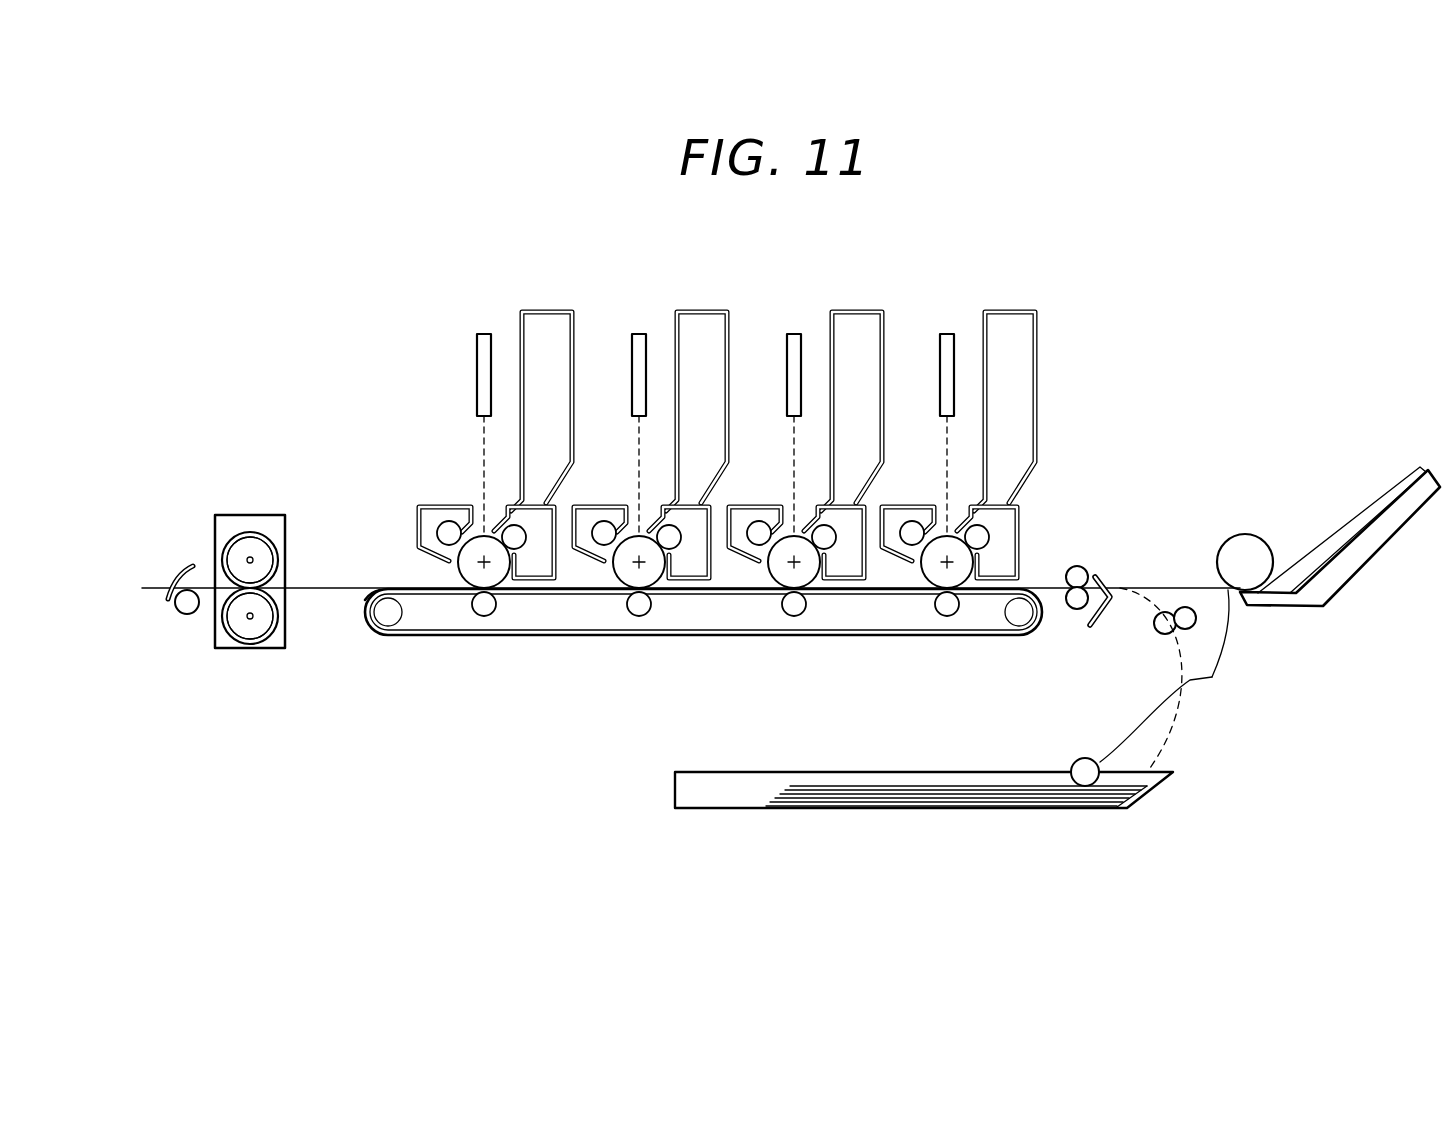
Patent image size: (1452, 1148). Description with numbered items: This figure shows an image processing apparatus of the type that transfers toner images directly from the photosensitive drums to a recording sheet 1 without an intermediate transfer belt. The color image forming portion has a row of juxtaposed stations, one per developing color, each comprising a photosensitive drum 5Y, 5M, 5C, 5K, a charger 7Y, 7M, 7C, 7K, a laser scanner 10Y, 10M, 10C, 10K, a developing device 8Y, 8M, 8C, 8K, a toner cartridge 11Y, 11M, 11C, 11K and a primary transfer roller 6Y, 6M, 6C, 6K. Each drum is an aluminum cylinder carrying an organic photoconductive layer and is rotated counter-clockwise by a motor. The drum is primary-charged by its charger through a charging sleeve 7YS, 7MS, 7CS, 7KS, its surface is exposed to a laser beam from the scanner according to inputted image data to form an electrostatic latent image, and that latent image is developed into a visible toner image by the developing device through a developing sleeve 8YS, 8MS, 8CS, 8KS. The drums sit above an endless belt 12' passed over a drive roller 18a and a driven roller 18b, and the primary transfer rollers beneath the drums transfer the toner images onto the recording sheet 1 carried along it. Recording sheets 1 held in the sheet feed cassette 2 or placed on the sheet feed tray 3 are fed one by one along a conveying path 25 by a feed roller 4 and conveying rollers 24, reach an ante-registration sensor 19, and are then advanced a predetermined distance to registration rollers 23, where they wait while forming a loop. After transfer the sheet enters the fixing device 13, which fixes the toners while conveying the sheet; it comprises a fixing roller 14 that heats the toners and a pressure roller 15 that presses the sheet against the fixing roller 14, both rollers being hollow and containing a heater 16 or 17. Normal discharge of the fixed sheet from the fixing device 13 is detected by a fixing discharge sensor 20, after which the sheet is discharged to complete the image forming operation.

The recording sheet 1 is at (1358, 532).
The sheet feed cassette 2 is at (733, 810).
The sheet feed tray 3 is at (1392, 540).
The feed roller 4 is at (1212, 677).
The photosensitive drum 5K is at (478, 537).
The photosensitive drum 5C is at (632, 523).
The photosensitive drum 5M is at (786, 523).
The photosensitive drum 5Y is at (940, 523).
The primary transfer roller 6K is at (484, 617).
The primary transfer roller 6C is at (643, 663).
The primary transfer roller 6M is at (798, 663).
The primary transfer roller 6Y is at (951, 663).
The charger 7K is at (434, 559).
The charger 7C is at (590, 591).
The charger 7M is at (744, 591).
The charger 7Y is at (899, 591).
The charging sleeve 7KS is at (451, 546).
The charging sleeve 7CS is at (601, 612).
The charging sleeve 7MS is at (757, 612).
The charging sleeve 7YS is at (910, 612).
The developing device 8K is at (544, 580).
The developing device 8C is at (685, 608).
The developing device 8M is at (841, 608).
The developing device 8Y is at (992, 608).
The developing sleeve 8KS is at (516, 549).
The developing sleeve 8CS is at (669, 603).
The developing sleeve 8MS is at (825, 603).
The developing sleeve 8YS is at (978, 603).
The laser scanner 10K is at (485, 334).
The laser scanner 10C is at (651, 410).
The laser scanner 10M is at (807, 410).
The laser scanner 10Y is at (960, 410).
The toner cartridge 11K is at (547, 312).
The toner cartridge 11C is at (705, 386).
The toner cartridge 11M is at (861, 386).
The toner cartridge 11Y is at (1013, 386).
The belt conveying roller 12' is at (373, 568).
The fixing device 13 is at (288, 617).
The fixing roller 14 is at (249, 534).
The pressure roller 15 is at (245, 649).
The heater 16 is at (240, 548).
The heater 17 is at (255, 620).
The drive roller 18a is at (1040, 590).
The driven roller 18b is at (362, 598).
The ante-registration sensor 19 is at (1106, 613).
The fixing discharge sensor 20 is at (183, 566).
The registration rollers 23 is at (1076, 609).
The conveying rollers 24 is at (1178, 608).
The conveying path 25 is at (1200, 586).